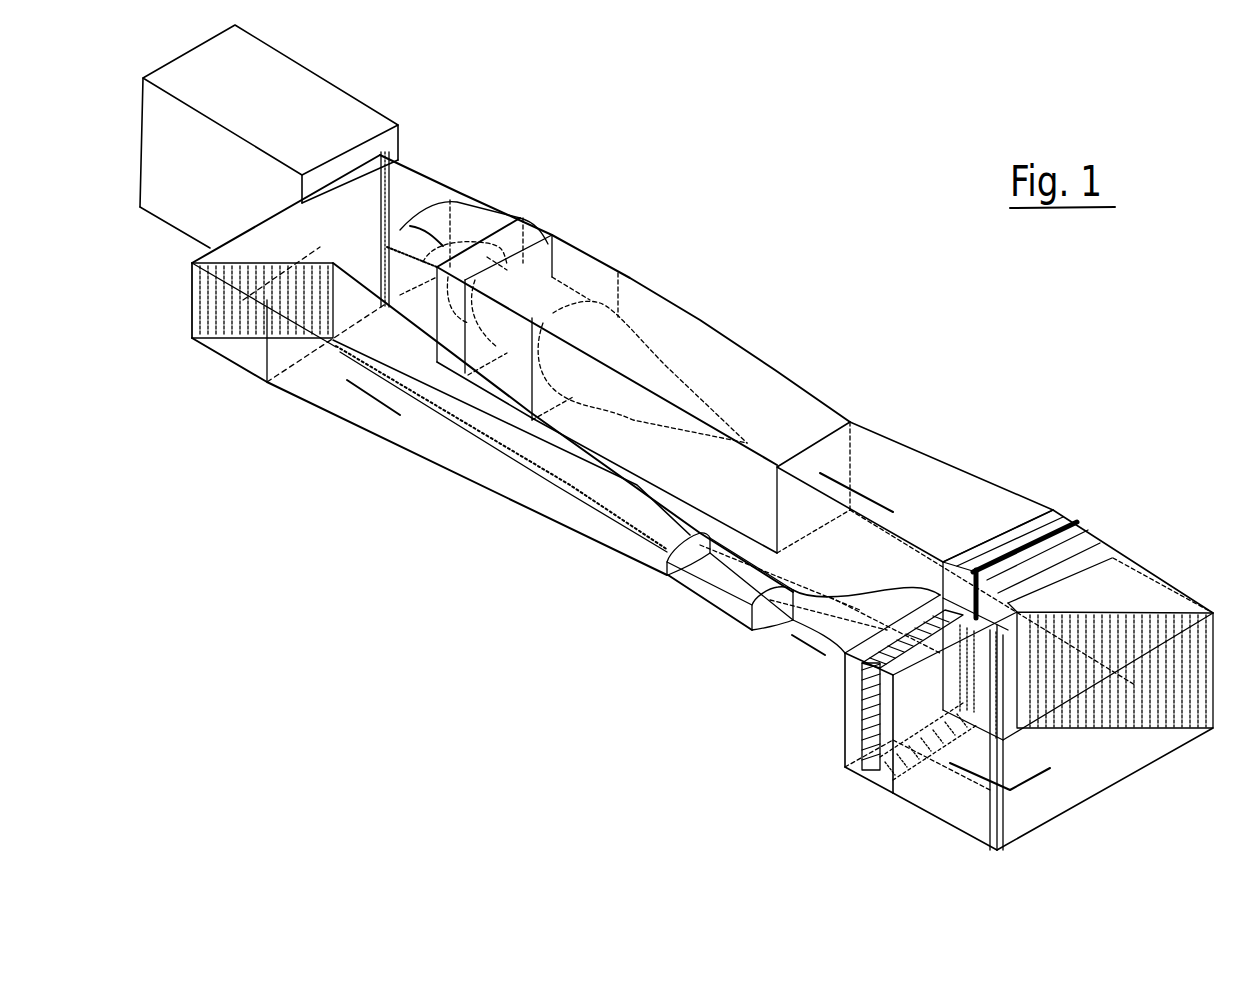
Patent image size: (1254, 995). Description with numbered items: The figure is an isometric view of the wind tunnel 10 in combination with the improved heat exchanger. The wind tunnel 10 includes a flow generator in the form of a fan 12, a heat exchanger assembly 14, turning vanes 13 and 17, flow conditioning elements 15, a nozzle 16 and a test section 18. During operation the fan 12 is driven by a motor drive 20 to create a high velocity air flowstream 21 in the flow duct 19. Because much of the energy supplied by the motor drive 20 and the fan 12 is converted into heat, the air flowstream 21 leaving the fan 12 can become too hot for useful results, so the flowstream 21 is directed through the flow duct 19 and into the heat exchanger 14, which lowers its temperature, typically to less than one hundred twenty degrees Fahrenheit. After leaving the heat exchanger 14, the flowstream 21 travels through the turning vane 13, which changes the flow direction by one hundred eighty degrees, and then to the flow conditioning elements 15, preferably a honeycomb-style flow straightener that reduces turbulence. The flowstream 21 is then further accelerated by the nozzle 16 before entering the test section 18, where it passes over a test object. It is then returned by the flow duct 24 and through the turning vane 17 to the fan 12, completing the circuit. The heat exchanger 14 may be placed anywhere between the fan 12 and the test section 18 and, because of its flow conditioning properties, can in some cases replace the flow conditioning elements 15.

The wind tunnel 10 is at (572, 145).
The fan 12 is at (543, 297).
The turning vane 13 is at (1152, 595).
The heat exchanger assembly 14 is at (1065, 510).
The flow conditioning elements 15 is at (866, 768).
The nozzle 16 is at (833, 712).
The turning vane 17 is at (288, 243).
The test section 18 is at (728, 607).
The flow duct 19 is at (890, 468).
The motor drive 20 is at (253, 55).
The air flowstream 21 is at (380, 255).
The flow duct 24 is at (448, 453).